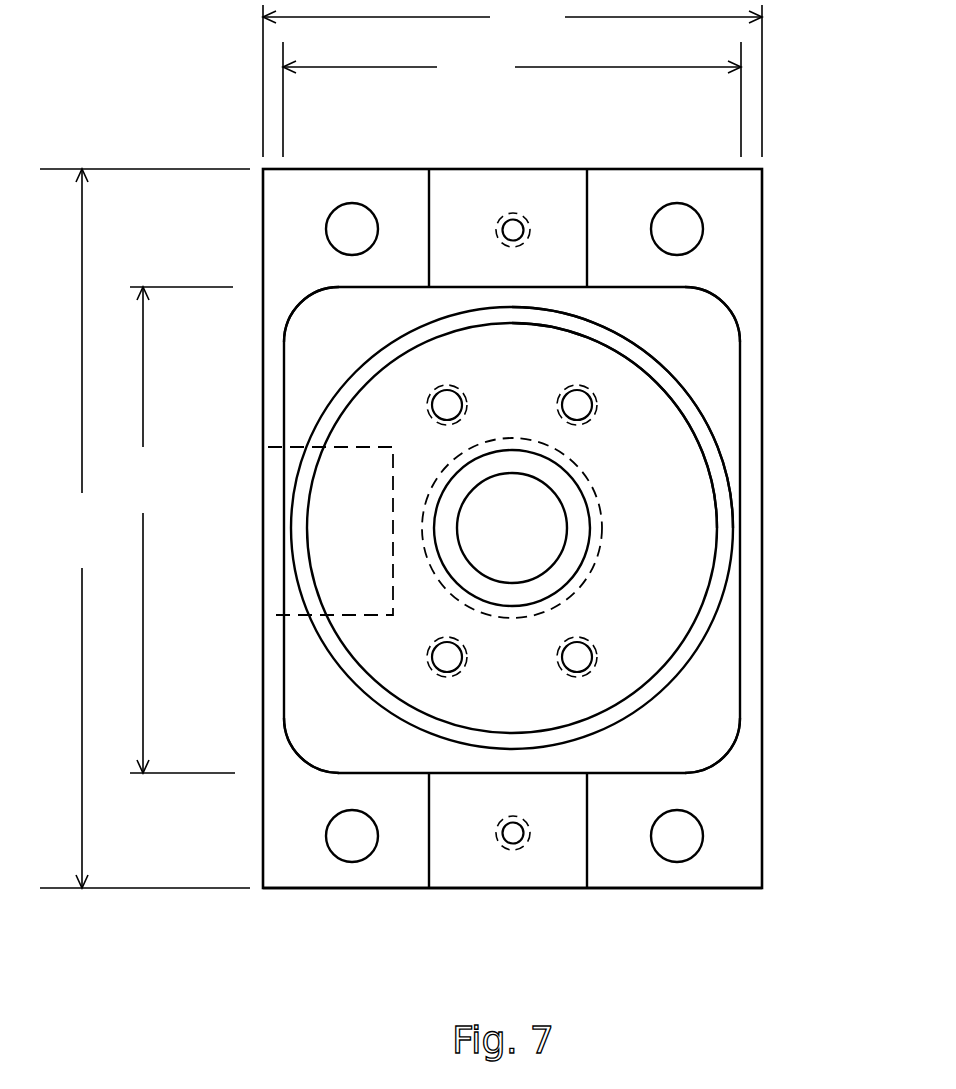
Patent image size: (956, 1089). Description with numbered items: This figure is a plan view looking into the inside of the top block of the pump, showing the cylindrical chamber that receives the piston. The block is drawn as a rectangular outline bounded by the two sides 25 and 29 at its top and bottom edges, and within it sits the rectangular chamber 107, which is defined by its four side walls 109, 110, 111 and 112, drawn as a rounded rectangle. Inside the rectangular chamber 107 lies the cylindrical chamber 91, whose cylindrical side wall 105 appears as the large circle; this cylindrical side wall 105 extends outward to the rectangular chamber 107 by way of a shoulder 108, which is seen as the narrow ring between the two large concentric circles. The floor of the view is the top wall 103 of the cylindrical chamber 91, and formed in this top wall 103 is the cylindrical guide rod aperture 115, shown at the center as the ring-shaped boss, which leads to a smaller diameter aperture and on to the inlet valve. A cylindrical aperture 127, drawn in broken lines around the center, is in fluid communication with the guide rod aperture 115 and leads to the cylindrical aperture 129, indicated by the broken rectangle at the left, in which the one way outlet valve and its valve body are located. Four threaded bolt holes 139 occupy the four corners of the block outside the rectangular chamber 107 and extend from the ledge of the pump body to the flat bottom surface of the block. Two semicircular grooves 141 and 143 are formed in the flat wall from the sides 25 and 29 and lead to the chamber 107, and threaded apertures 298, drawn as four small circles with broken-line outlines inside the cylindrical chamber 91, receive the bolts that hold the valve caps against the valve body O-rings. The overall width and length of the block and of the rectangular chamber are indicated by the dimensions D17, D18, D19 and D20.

The side 25 is at (672, 170).
The side 29 is at (402, 890).
The cylindrical chamber 91 is at (695, 470).
The top wall 103 is at (695, 545).
The cylindrical side wall 105 is at (680, 633).
The rectangular chamber 107 is at (702, 708).
The shoulder 108 is at (673, 660).
The side wall 109 is at (360, 288).
The side wall 110 is at (740, 373).
The side wall 111 is at (662, 765).
The side wall 112 is at (284, 718).
The cylindrical guide rod aperture 115 is at (442, 570).
The cylindrical aperture 127 is at (420, 492).
The cylindrical aperture 129 is at (343, 450).
The threaded bolt holes 139 is at (325, 228).
The semicircular groove 141 is at (550, 190).
The semicircular groove 143 is at (545, 873).
The threaded apertures 298 is at (597, 404).
The dimension D17 is at (512, 99).
The dimension D18 is at (512, 78).
The dimension D19 is at (174, 530).
The dimension D20 is at (145, 528).